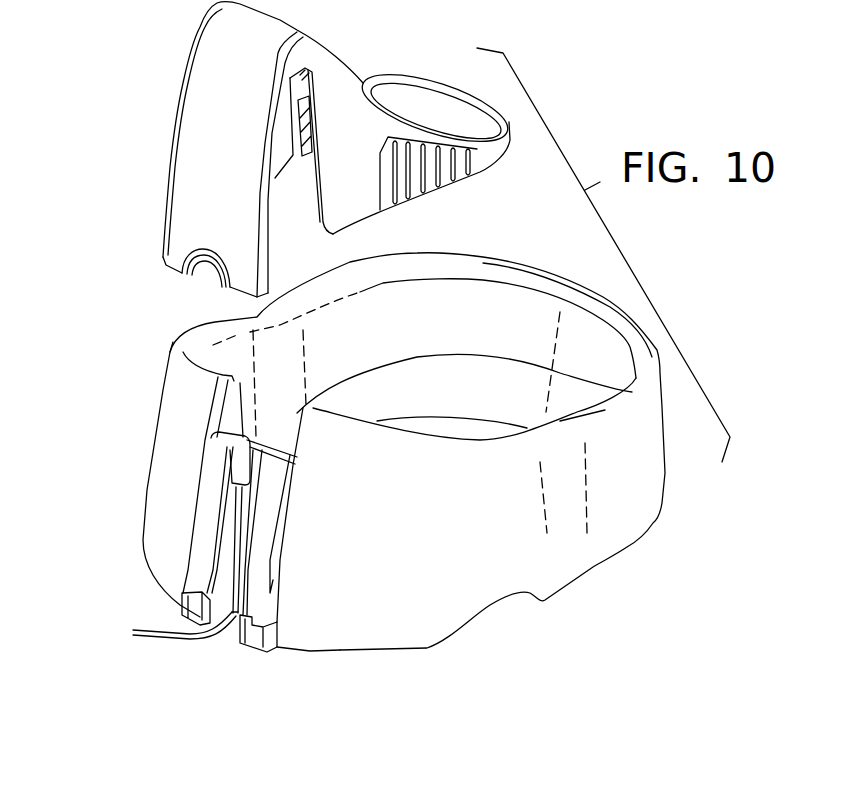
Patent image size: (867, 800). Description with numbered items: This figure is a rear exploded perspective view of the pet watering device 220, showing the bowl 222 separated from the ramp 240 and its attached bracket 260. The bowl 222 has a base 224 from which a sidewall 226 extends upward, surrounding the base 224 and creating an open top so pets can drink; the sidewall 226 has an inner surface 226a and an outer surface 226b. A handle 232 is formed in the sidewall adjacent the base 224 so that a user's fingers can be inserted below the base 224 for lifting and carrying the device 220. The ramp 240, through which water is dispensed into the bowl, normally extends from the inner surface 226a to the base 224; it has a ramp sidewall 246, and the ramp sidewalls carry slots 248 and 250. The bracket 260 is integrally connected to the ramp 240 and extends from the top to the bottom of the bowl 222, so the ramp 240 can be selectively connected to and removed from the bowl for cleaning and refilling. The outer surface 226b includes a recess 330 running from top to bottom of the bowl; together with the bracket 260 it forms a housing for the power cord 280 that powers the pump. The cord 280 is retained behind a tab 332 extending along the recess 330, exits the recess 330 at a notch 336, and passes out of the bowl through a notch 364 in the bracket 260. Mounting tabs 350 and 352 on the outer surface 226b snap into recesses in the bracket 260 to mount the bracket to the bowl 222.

The pet watering device 220 is at (122, 163).
The bowl 222 is at (573, 560).
The base 224 is at (472, 426).
The sidewall 226 is at (636, 510).
The inner surface 226a is at (501, 326).
The outer surface 226b is at (193, 380).
The handle 232 is at (463, 614).
The ramp 240 is at (452, 103).
The ramp sidewall 246 is at (295, 95).
The slot 248 is at (443, 170).
The slot 250 is at (308, 155).
The bracket 260 is at (251, 119).
The power cord 280 is at (215, 444).
The recess 330 is at (258, 460).
The tab 332 is at (232, 510).
The notch 336 is at (228, 632).
The mounting tab 350 is at (183, 599).
The mounting tab 352 is at (268, 622).
The notch 364 is at (200, 272).